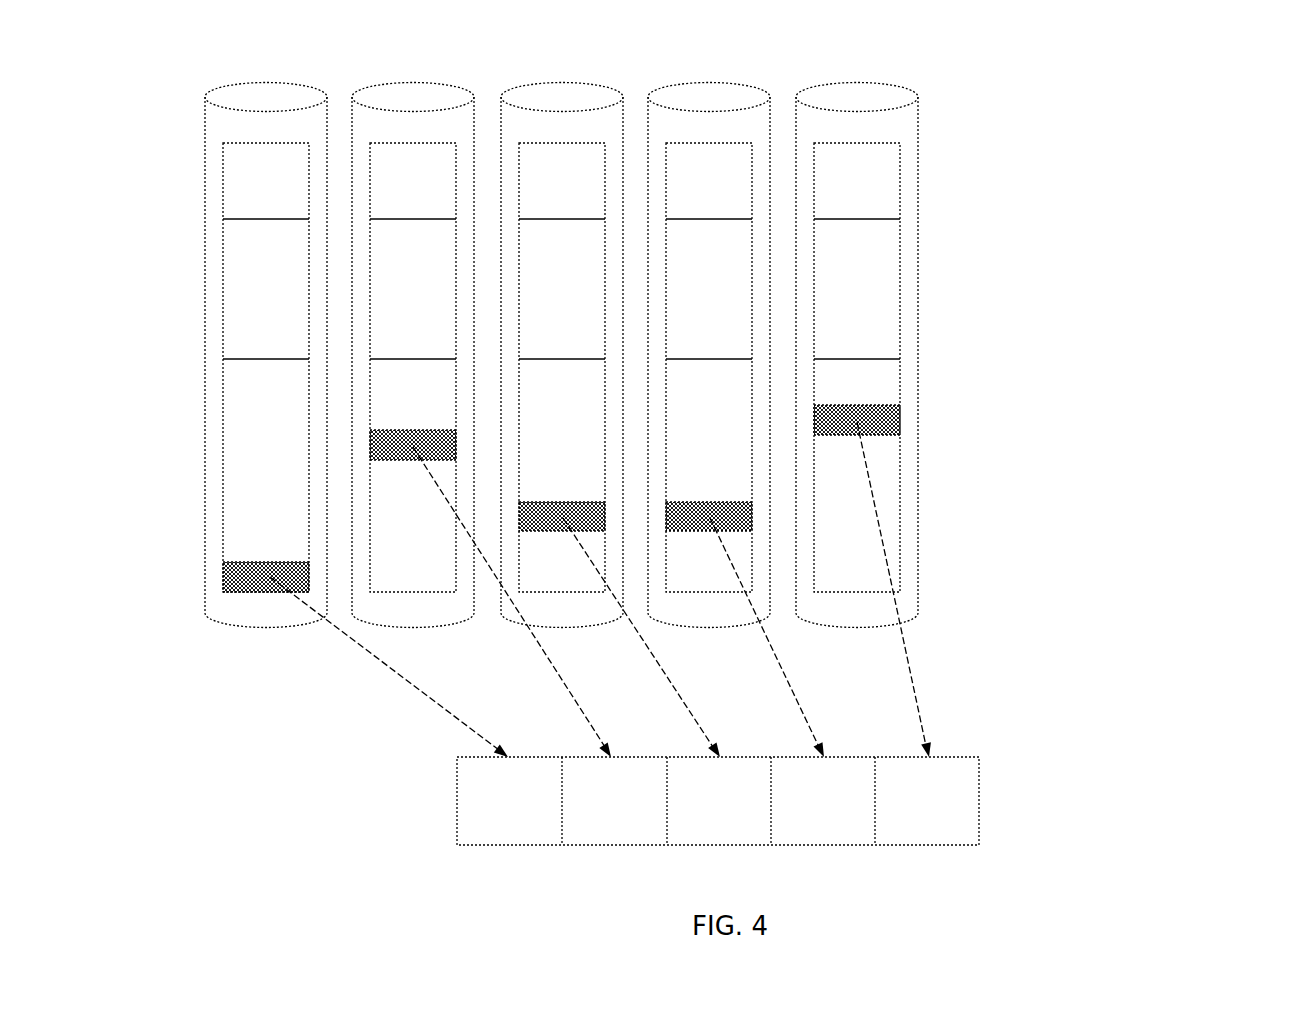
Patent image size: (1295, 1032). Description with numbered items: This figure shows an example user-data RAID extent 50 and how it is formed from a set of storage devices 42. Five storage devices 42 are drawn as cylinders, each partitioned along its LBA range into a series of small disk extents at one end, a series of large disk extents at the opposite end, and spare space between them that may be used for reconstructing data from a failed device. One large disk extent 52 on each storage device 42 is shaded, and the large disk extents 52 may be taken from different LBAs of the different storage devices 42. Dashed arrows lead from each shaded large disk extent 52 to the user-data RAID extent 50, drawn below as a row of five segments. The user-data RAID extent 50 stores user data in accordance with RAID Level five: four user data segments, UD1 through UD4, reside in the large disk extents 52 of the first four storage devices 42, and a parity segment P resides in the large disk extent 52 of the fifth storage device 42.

The storage devices 42 is at (989, 57).
The large disk extents 52 is at (183, 513).
The user-data RAID extent 50 is at (997, 845).